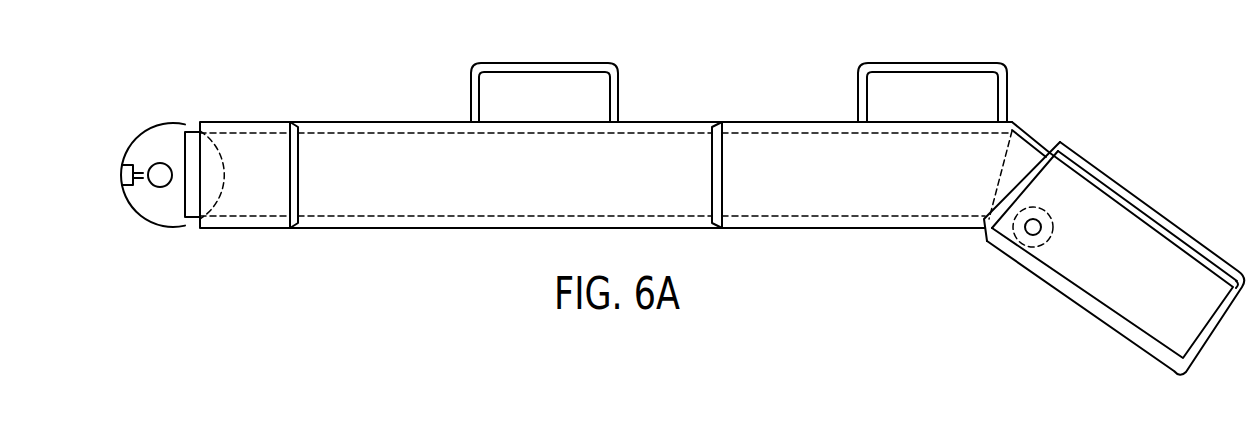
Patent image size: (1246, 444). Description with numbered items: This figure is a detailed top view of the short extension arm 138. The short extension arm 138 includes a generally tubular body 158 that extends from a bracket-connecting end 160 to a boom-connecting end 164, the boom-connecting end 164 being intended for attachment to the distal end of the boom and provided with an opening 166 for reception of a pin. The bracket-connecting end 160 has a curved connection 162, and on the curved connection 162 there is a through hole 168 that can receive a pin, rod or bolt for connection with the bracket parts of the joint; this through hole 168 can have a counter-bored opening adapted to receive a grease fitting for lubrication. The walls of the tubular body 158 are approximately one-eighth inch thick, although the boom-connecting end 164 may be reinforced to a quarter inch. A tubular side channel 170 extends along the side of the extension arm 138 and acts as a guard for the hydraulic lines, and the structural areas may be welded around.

The short extension arm 138 is at (828, 50).
The tubular body 158 is at (805, 207).
The bracket-connecting end 160 is at (173, 236).
The curved connection 162 is at (131, 226).
The boom-connecting end 164 is at (1048, 338).
The opening 166 is at (169, 164).
The through hole 168 is at (121, 176).
The tubular side channel 170 is at (405, 205).